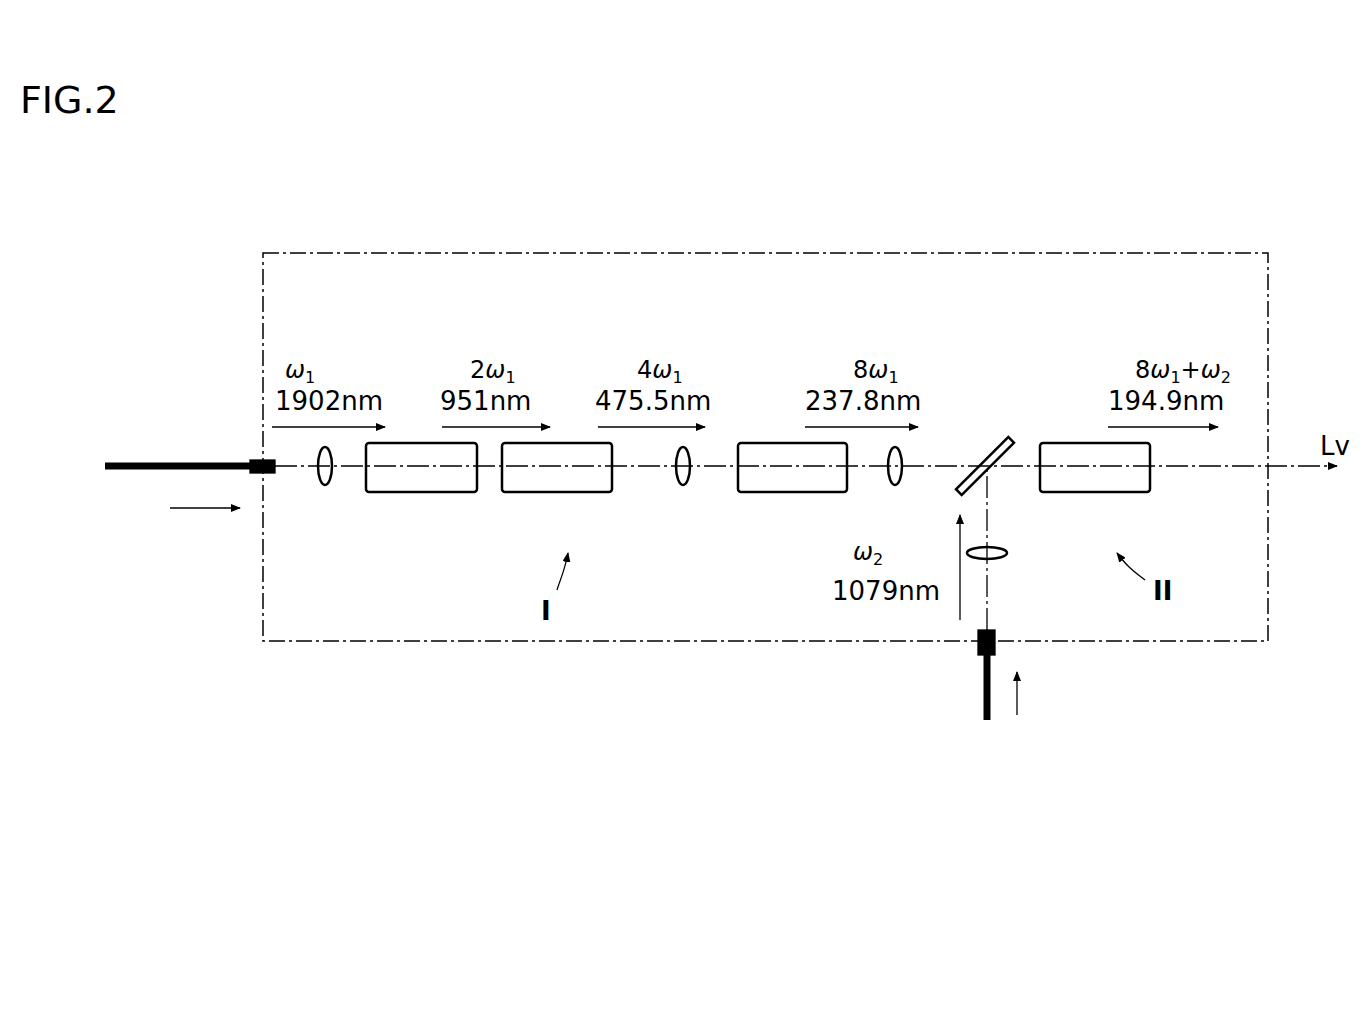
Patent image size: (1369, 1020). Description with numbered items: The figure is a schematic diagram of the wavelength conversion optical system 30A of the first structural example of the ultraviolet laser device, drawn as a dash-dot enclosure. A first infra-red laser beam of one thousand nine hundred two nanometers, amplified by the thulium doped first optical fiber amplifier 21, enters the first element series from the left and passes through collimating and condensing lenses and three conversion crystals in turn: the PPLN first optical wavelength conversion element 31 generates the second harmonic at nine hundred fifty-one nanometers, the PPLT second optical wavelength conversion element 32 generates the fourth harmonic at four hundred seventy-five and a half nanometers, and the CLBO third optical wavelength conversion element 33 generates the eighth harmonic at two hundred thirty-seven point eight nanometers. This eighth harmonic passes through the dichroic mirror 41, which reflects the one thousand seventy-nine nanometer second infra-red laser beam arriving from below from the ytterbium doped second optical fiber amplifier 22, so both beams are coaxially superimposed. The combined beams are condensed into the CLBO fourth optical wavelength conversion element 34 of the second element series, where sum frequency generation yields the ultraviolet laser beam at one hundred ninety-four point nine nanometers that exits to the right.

The first optical fiber amplifier 21 is at (122, 478).
The second optical fiber amplifier 22 is at (963, 735).
The wavelength conversion optical system 30A is at (870, 252).
The first optical wavelength conversion element 31 is at (409, 443).
The second optical wavelength conversion element 32 is at (566, 443).
The third optical wavelength conversion element 33 is at (780, 443).
The fourth optical wavelength conversion element 34 is at (1080, 443).
The dichroic mirror 41 is at (985, 440).